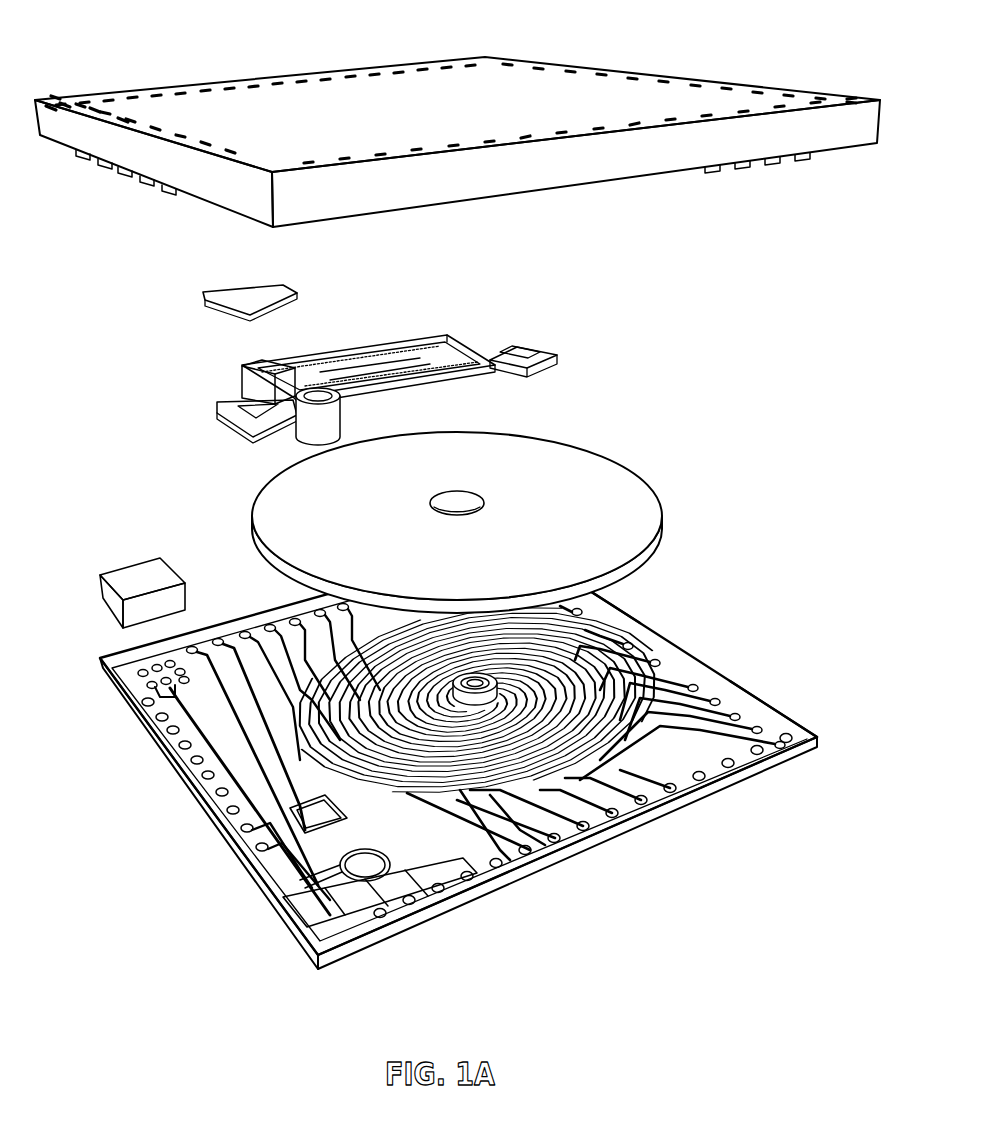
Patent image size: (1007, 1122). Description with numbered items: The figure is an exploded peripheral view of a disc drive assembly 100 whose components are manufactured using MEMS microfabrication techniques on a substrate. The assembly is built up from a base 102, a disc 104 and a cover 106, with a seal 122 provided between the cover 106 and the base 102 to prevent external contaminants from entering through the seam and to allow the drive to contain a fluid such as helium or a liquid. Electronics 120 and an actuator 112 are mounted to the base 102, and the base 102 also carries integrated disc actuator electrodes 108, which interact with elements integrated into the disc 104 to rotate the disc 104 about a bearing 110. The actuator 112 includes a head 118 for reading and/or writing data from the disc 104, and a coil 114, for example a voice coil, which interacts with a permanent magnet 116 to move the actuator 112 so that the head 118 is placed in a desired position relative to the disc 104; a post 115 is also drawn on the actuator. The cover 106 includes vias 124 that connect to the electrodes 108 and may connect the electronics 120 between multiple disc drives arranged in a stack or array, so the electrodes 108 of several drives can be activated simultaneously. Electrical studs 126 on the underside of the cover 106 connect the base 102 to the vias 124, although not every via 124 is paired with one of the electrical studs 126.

The disc drive assembly 100 is at (146, 40).
The base 102 is at (444, 846).
The disc 104 is at (563, 538).
The cover 106 is at (448, 119).
The disc actuator electrodes 108 is at (436, 737).
The bearing 110 is at (600, 630).
The actuator 112 is at (440, 308).
The coil 114 is at (242, 393).
The post 115 is at (322, 412).
The permanent magnet 116 is at (255, 288).
The head 118 is at (560, 365).
The electronics 120 is at (107, 592).
The seal 122 is at (765, 698).
The vias 124 is at (833, 93).
The electrical studs 126 is at (183, 194).